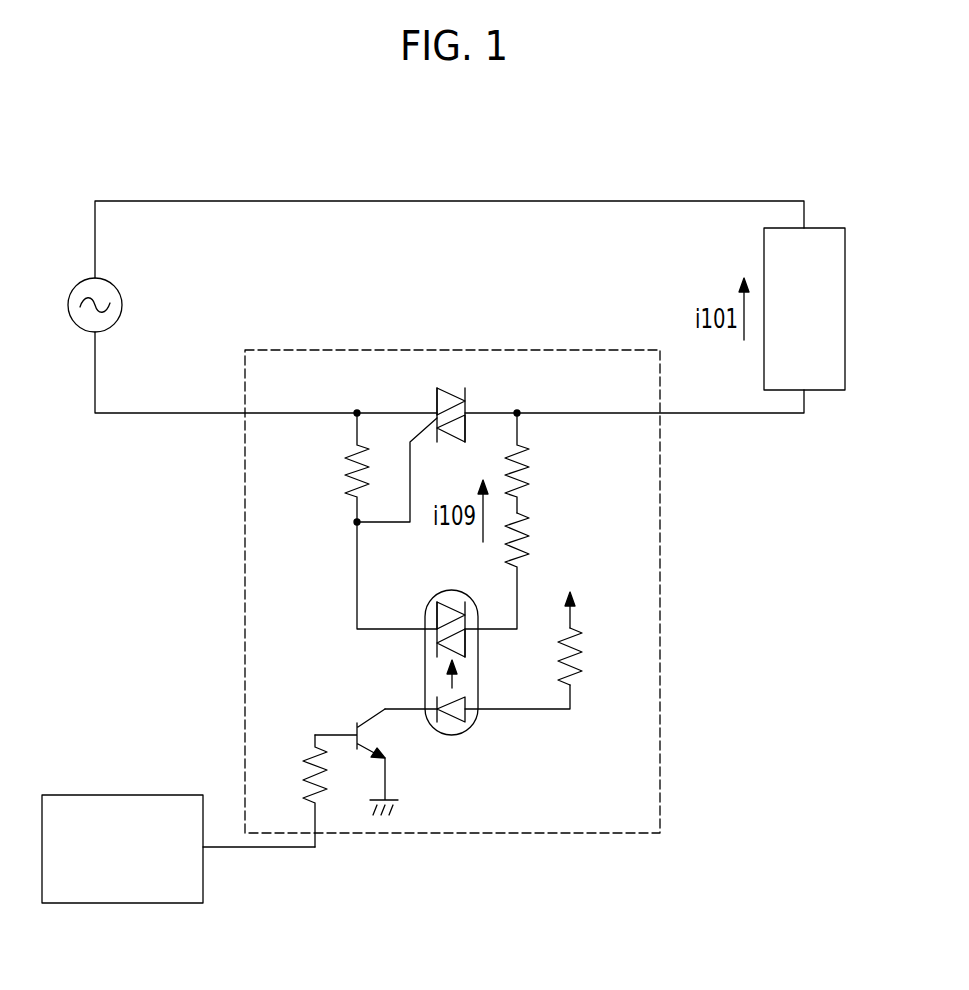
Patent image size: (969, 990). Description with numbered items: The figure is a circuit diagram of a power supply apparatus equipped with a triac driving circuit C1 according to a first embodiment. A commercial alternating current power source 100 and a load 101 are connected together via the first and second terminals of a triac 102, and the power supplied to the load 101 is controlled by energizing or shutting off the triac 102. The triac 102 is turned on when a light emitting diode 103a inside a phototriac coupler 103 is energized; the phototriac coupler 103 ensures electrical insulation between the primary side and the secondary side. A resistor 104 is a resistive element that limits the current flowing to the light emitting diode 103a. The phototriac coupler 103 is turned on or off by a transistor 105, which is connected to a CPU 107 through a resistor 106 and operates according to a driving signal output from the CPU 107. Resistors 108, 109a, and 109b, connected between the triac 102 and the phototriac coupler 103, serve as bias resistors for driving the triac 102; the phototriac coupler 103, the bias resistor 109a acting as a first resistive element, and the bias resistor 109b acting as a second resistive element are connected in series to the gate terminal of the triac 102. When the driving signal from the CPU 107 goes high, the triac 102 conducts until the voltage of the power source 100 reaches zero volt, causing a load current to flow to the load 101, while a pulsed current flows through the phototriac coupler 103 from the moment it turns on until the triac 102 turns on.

The commercial alternating current power source 100 is at (118, 320).
The load 101 is at (820, 228).
The triac 102 is at (456, 389).
The phototriac coupler 103 is at (465, 640).
The light emitting diode 103a is at (470, 707).
The resistor 104 is at (585, 665).
The transistor 105 is at (388, 740).
The resistor 106 is at (300, 774).
The CPU 107 is at (165, 795).
The bias resistor 108 is at (345, 463).
The bias resistor (first resistive element) 109a is at (534, 462).
The bias resistor (second resistive element) 109b is at (534, 540).
The triac driving circuit C1 is at (662, 800).